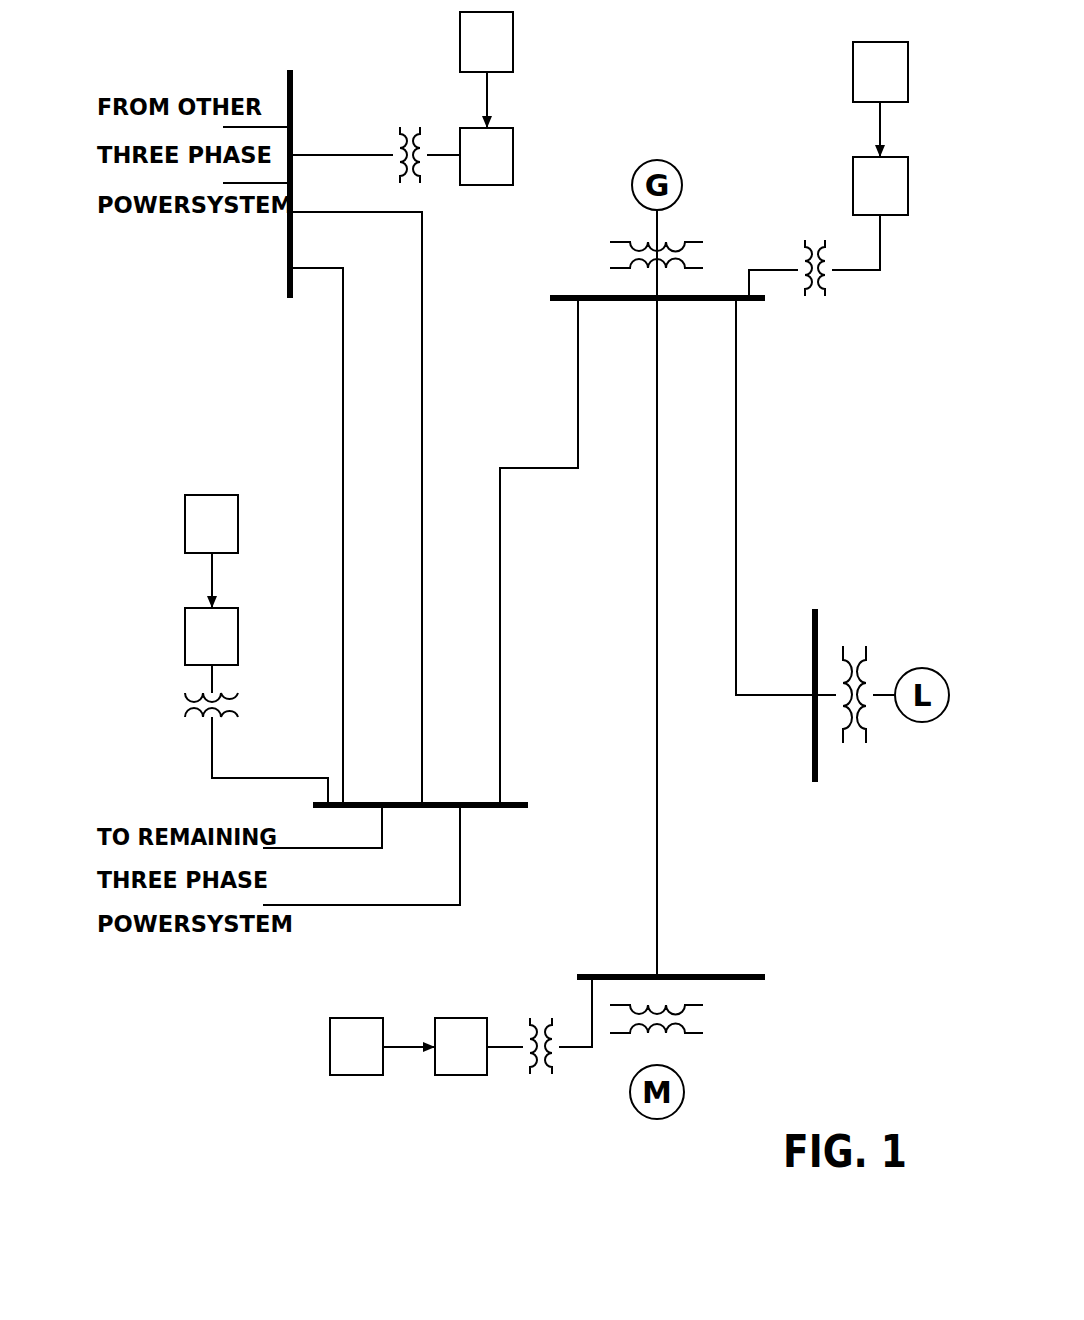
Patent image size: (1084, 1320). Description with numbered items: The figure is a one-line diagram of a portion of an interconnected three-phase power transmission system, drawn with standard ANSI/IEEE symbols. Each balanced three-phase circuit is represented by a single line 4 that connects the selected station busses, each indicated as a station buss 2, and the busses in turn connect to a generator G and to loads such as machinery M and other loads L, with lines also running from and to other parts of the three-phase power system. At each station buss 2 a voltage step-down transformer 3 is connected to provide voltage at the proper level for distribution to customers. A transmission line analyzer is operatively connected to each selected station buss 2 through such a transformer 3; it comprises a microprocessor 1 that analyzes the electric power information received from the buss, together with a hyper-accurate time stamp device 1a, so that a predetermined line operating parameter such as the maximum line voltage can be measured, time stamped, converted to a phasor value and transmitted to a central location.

The microprocessor 1 is at (546, 601).
The hyper-accurate time stamp device 1a is at (546, 543).
The station buss 2 is at (280, 243).
The voltage step-down transformer 3 is at (408, 108).
The single line 4 is at (340, 410).